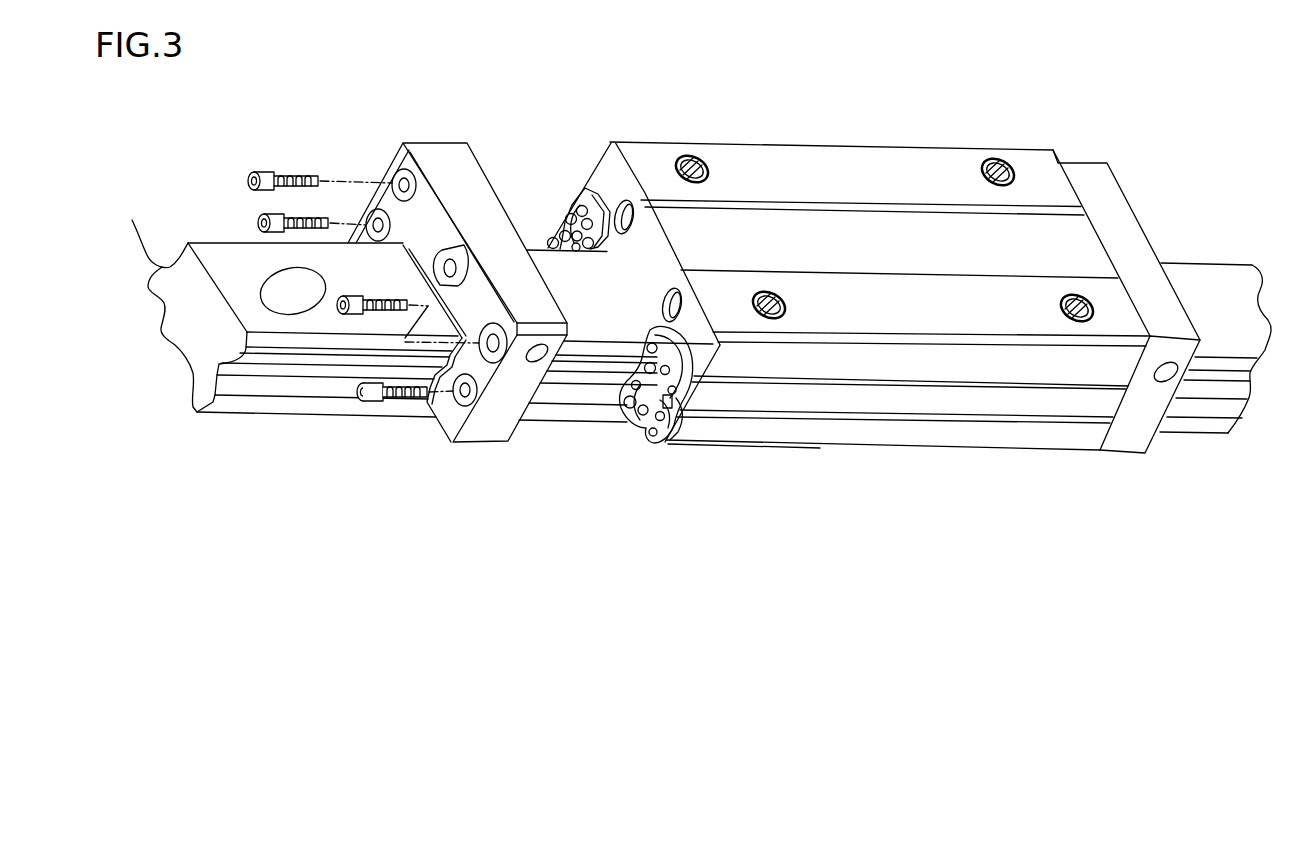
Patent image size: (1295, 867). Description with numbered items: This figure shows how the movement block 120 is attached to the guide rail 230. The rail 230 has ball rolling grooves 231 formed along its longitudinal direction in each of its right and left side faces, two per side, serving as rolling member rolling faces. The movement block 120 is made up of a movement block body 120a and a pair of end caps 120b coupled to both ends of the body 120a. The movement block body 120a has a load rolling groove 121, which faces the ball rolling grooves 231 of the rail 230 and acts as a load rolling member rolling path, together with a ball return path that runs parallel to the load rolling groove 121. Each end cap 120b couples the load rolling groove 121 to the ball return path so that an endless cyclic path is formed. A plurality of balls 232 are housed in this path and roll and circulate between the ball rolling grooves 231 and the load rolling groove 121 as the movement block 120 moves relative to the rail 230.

The movement block 120 is at (818, 163).
The movement block body 120a is at (995, 438).
The end cap 120b is at (493, 432).
The load rolling groove 121 is at (660, 430).
The rail 230 is at (187, 335).
The ball rolling groove 231 is at (188, 243).
The ball 232 is at (562, 226).